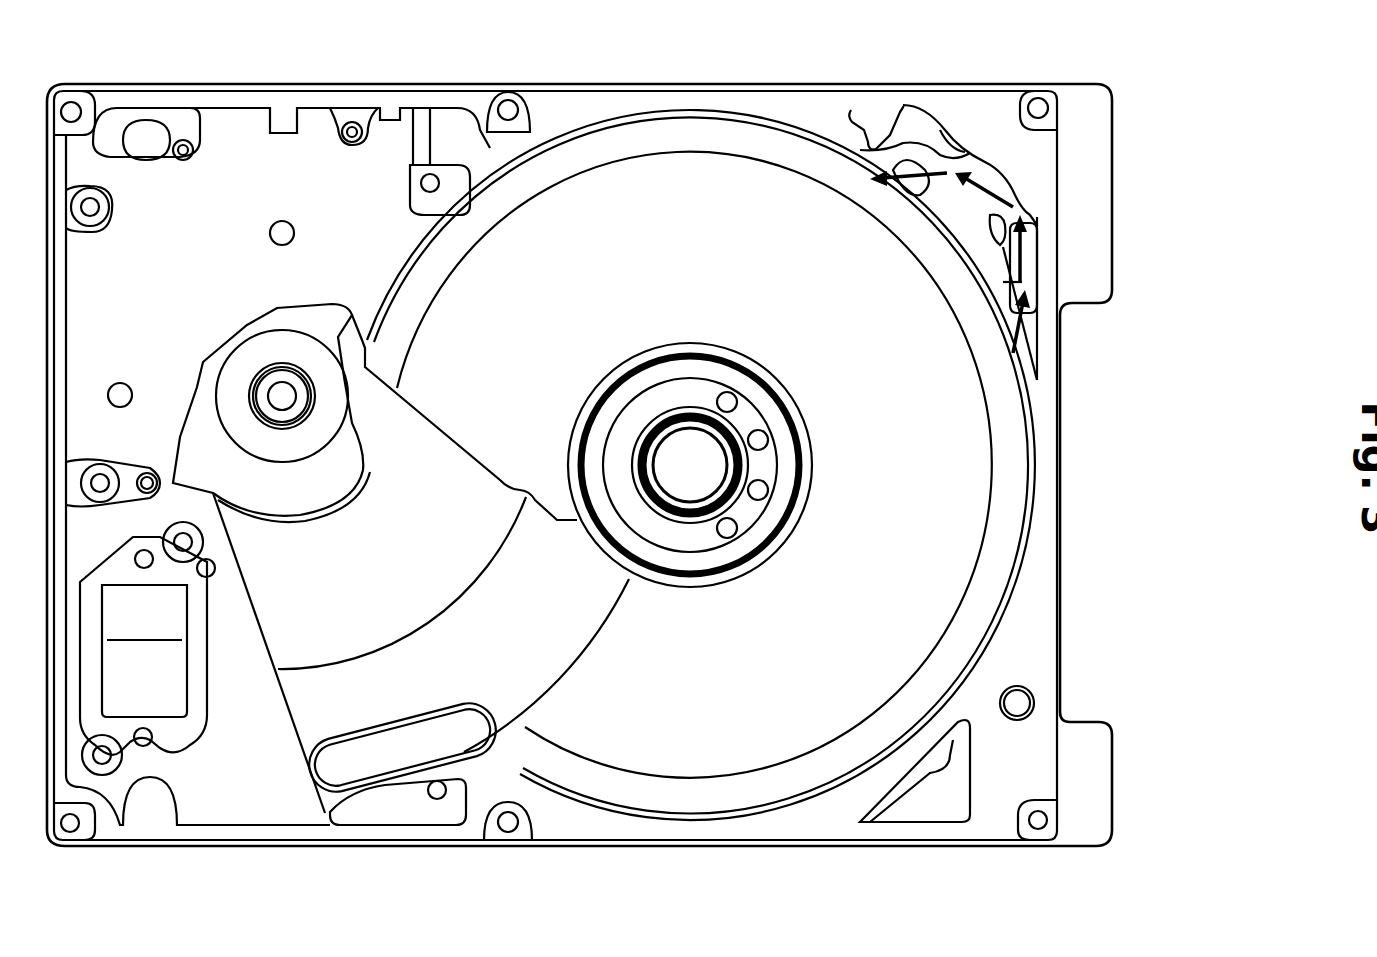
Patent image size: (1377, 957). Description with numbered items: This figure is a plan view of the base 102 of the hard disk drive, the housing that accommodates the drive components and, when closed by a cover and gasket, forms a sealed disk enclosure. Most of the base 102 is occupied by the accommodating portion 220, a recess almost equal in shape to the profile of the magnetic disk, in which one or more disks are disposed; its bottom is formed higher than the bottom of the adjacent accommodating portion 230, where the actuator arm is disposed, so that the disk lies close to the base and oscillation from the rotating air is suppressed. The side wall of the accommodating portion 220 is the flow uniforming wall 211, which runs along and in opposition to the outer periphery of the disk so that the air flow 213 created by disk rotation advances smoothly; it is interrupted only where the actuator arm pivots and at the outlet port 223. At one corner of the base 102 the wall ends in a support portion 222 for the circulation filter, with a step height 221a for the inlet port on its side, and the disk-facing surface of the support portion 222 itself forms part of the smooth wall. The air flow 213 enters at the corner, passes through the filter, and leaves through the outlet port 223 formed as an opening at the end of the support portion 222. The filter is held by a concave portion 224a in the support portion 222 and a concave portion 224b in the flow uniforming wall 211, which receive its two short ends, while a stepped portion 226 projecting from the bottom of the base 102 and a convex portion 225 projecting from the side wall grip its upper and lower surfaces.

The base 102 is at (1085, 680).
The flow uniforming wall 211 is at (762, 118).
The air flow 213 is at (1027, 260).
The accommodating portion 220 is at (982, 458).
The step height for inlet port 221a is at (1003, 303).
The support portion 222 is at (1003, 282).
The outlet port 223 is at (917, 107).
The concave portion 224a is at (1003, 223).
The concave portion 224b is at (880, 110).
The convex portion 225 is at (953, 147).
The stepped portion 226 is at (1005, 178).
The accommodating portion 230 is at (305, 640).